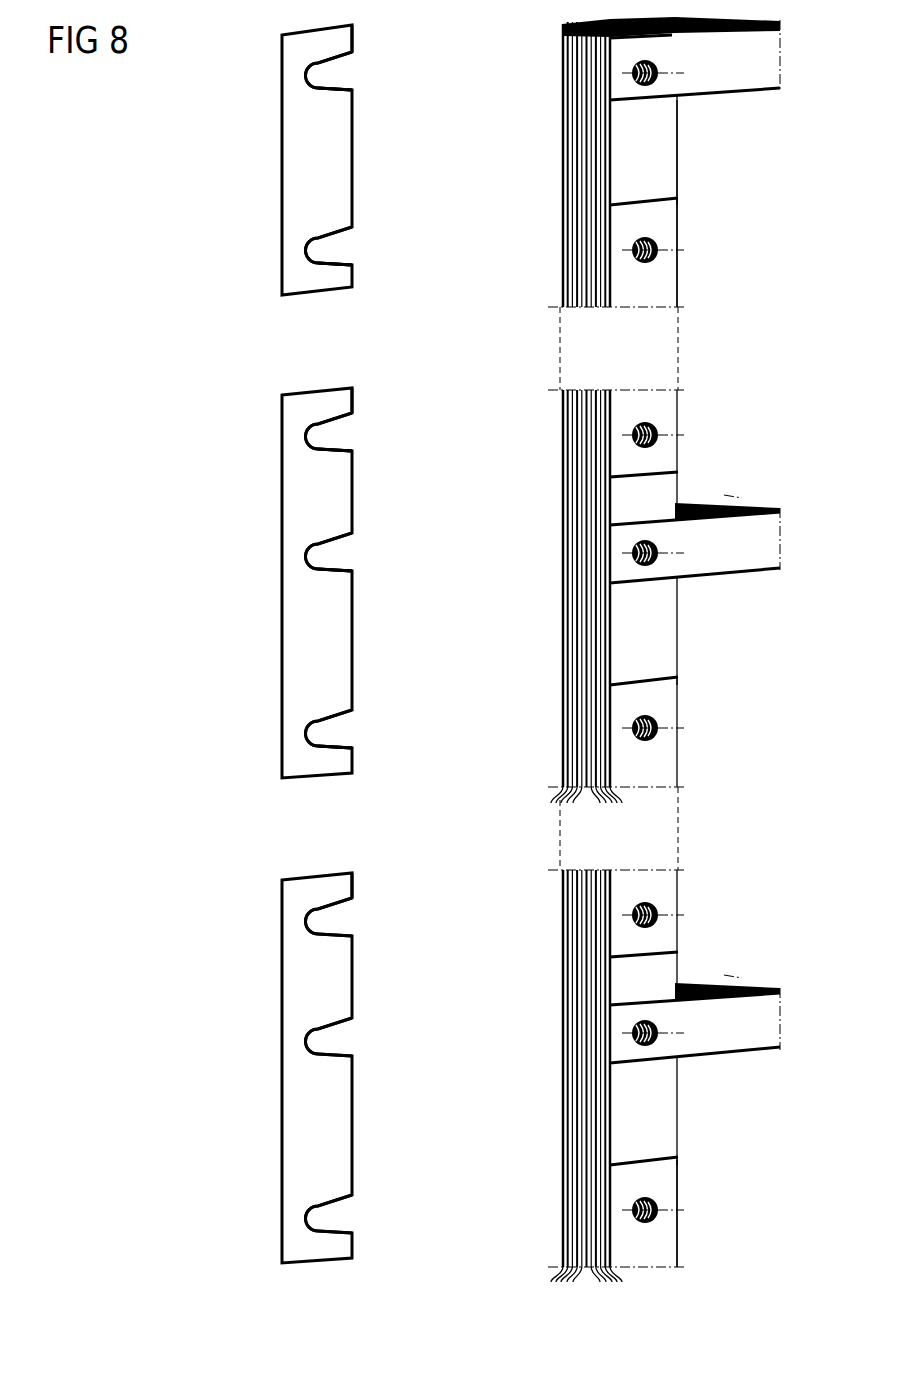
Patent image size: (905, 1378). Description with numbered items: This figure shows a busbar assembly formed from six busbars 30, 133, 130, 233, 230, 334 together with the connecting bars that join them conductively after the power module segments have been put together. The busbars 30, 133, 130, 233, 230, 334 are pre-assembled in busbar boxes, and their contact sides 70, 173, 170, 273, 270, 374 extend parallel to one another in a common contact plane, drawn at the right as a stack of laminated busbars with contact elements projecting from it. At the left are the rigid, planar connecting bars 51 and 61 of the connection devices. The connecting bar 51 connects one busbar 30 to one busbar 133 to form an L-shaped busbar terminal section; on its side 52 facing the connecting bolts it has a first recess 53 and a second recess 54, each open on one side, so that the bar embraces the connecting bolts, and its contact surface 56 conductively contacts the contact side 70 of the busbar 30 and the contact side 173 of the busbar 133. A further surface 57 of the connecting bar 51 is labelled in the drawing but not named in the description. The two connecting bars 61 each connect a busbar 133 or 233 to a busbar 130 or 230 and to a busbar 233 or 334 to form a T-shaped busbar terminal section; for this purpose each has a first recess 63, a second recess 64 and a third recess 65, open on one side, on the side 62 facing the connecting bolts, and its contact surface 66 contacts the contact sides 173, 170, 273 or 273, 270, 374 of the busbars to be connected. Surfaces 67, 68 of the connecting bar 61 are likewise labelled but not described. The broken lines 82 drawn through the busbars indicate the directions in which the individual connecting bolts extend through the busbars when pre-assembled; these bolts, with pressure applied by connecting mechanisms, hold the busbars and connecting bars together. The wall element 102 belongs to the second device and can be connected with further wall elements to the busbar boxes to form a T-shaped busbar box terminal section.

The busbar 30 is at (762, 30).
The connecting bar 51 is at (298, 163).
The side facing the connecting bolts 52 is at (353, 38).
The first recess 53 is at (310, 75).
The second recess 54 is at (310, 250).
The contact surface 56 is at (300, 91).
The second web 57 is at (300, 267).
The connecting bar 61 is at (298, 648).
The tab of second sheet 62 is at (353, 398).
The first recess 63 is at (310, 560).
The second recess 64 is at (310, 735).
The third recess 65 is at (310, 440).
The contact surface 66 is at (300, 453).
The lower web 67 is at (300, 750).
The middle web 68 is at (300, 573).
The contact side 70 is at (609, 93).
The broken lines 82 is at (681, 71).
The wall element 102 is at (681, 1212).
The busbar 130 is at (738, 502).
The busbar 133 is at (587, 26).
The contact side 170 is at (610, 575).
The contact side 173 is at (612, 222).
The busbar 230 is at (738, 982).
The busbar 233 is at (584, 808).
The contact side 270 is at (612, 1003).
The contact side 273 is at (612, 697).
The busbar 334 is at (584, 1289).
The contact side 374 is at (612, 1180).